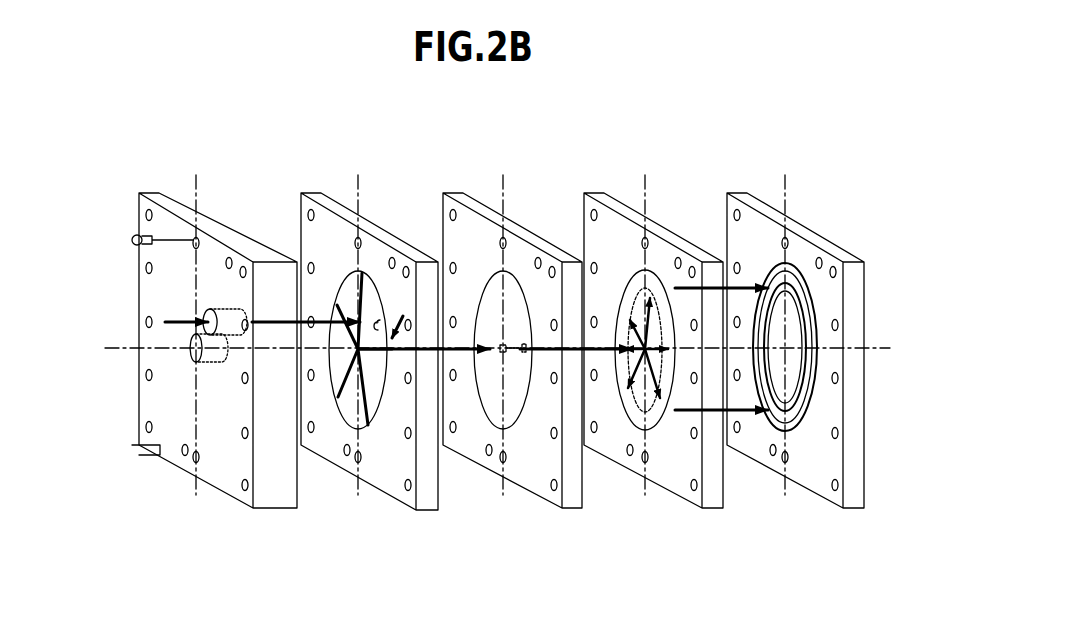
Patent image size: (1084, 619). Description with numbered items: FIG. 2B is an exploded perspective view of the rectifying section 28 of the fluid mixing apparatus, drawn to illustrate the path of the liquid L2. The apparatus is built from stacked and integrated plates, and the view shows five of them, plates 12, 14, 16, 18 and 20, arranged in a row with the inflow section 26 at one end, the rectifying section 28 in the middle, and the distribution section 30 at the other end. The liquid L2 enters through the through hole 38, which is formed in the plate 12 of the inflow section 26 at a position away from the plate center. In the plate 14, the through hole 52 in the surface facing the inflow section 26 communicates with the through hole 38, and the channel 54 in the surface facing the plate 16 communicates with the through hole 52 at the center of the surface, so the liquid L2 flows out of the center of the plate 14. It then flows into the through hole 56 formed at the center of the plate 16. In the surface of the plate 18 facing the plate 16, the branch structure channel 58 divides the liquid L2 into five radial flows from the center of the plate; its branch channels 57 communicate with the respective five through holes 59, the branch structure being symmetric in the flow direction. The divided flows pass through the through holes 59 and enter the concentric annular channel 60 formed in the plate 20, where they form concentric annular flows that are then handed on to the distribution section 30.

The plate 12 is at (254, 508).
The plate 14 is at (418, 510).
The plate 16 is at (563, 508).
The plate 18 is at (703, 508).
The plate 20 is at (843, 508).
The inflow section 26 is at (204, 164).
The rectifying section 28 is at (290, 165).
The distribution section 30 is at (792, 164).
The through hole 38 is at (213, 314).
The through hole 52 is at (367, 278).
The channel 54 is at (401, 312).
The through hole 56 is at (510, 354).
The branch channels 57 is at (646, 288).
The branch structure channel 58 is at (640, 434).
The through holes 59 is at (662, 286).
The concentric annular channel 60 is at (790, 268).
The liquid L2 is at (184, 318).